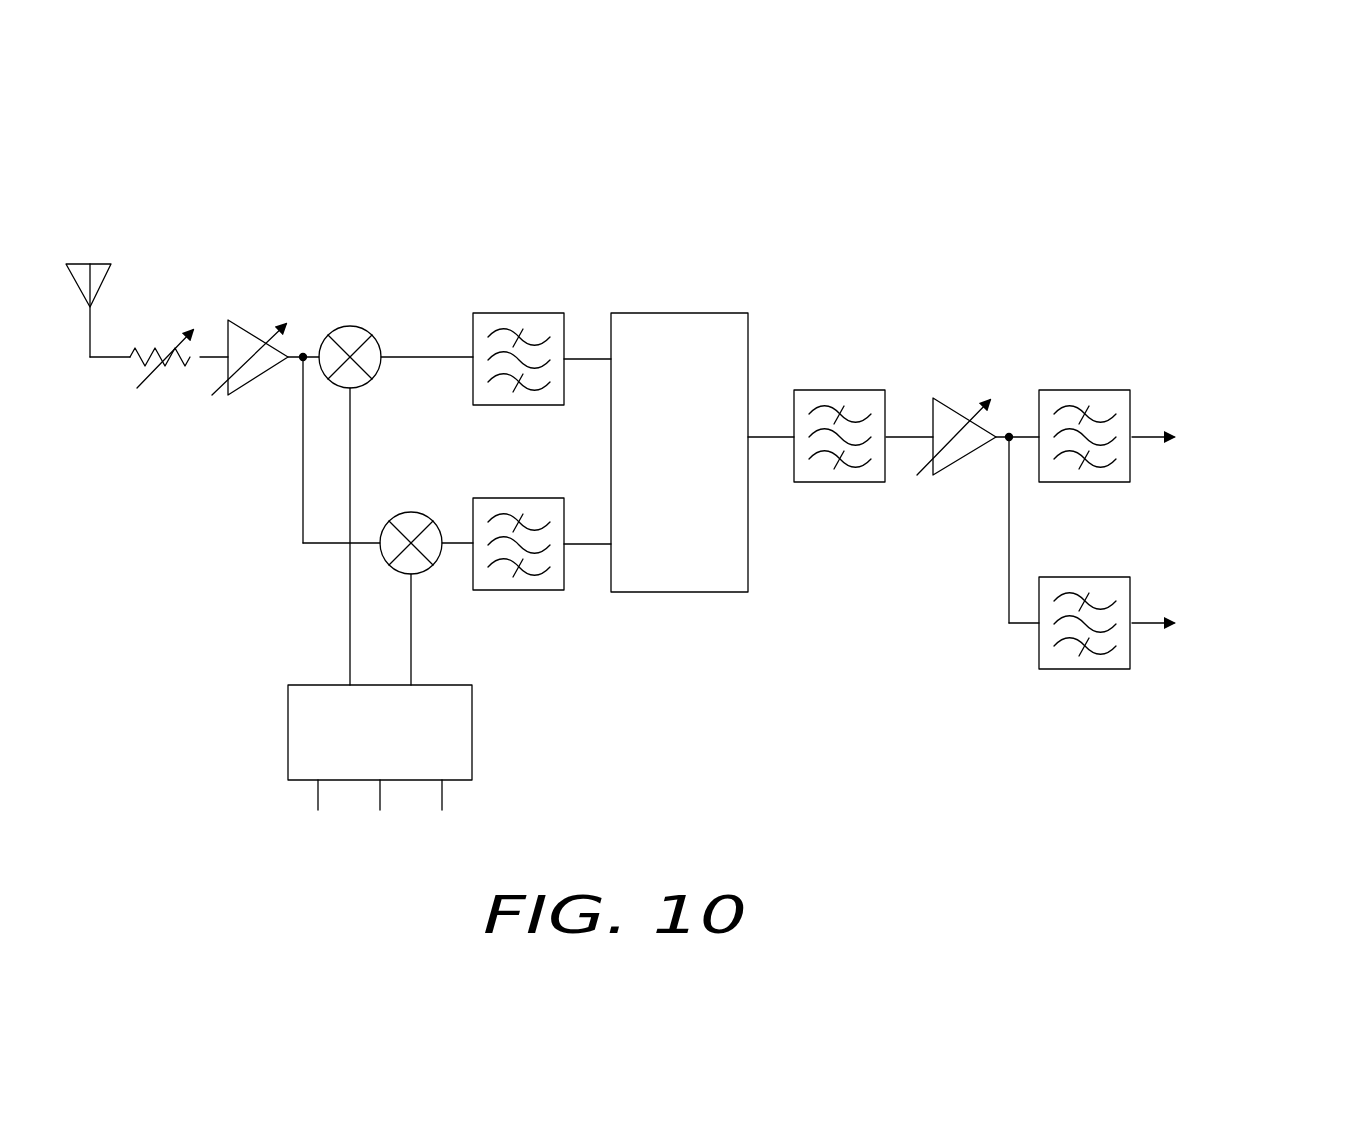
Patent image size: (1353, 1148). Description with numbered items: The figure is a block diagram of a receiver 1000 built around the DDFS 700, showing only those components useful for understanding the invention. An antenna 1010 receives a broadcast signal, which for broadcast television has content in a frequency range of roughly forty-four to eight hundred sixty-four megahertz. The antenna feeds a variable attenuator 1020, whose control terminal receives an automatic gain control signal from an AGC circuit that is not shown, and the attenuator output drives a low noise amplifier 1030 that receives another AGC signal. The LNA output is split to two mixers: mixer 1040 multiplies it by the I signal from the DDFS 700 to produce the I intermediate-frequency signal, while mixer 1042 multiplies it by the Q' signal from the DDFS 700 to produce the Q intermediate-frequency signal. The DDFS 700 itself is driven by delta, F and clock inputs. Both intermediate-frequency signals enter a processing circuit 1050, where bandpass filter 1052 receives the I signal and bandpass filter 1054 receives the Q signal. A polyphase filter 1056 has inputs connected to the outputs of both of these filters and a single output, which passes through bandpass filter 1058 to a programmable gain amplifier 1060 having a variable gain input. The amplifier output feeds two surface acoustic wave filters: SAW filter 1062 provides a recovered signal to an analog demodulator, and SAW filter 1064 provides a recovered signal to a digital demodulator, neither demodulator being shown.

The receiver 1000 is at (982, 123).
The antenna 1010 is at (106, 263).
The variable attenuator 1020 is at (160, 338).
The low noise amplifier 1030 is at (227, 313).
The mixer 1040 is at (362, 328).
The mixer 1042 is at (419, 508).
The processing circuit 1050 is at (418, 238).
The bandpass filter 1052 is at (534, 310).
The bandpass filter 1054 is at (534, 493).
The polyphase filter 1056 is at (709, 310).
The bandpass filter 1058 is at (847, 389).
The programmable gain amplifier 1060 is at (938, 399).
The surface acoustic wave filter 1062 is at (1102, 389).
The surface acoustic wave filter 1064 is at (1102, 576).
The DDFS 700 is at (288, 707).